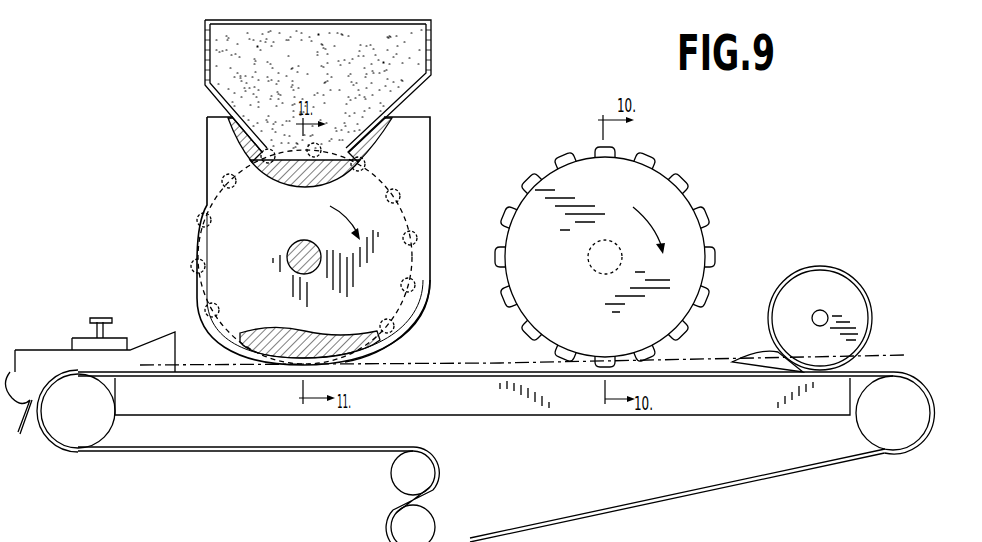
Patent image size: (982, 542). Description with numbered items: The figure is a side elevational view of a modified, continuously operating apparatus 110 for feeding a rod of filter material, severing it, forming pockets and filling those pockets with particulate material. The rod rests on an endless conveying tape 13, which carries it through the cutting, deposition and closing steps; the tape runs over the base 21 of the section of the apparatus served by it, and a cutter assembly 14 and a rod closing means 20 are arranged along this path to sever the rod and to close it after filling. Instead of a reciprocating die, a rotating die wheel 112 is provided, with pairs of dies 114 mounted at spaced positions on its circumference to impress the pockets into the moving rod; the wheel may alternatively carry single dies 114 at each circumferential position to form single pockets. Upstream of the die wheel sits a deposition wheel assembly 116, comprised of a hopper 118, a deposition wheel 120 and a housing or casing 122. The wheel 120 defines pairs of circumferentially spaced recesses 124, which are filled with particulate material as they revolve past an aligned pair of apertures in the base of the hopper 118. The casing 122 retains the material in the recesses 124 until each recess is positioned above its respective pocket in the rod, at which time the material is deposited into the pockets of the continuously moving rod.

The apparatus 110 is at (507, 105).
The hopper 118 is at (431, 48).
The deposition wheel assembly 116 is at (431, 150).
The deposition wheel 120 is at (198, 240).
The recesses 124 is at (212, 299).
The housing or casing 122 is at (432, 284).
The rotating die wheel 112 is at (690, 198).
The dies 114 is at (527, 178).
The cutter assembly 14 is at (835, 292).
The rod closing means 20 is at (55, 350).
The base 21 is at (567, 400).
The endless conveying tape 13 is at (727, 378).